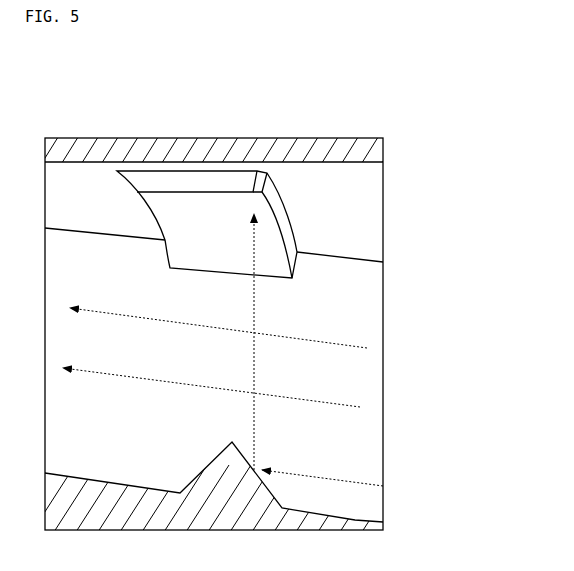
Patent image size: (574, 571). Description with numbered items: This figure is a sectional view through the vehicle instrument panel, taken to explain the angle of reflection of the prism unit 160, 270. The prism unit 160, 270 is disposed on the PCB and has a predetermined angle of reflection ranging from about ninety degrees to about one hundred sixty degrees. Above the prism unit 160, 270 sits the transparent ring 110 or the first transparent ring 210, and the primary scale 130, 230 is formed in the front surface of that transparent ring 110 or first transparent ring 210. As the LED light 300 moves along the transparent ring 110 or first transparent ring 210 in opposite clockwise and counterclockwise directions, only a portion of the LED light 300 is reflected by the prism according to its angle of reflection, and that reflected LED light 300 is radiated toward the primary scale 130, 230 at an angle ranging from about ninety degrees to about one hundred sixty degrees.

The transparent ring 110 is at (281, 332).
The first transparent ring 210 is at (355, 216).
The primary scale 130 is at (207, 177).
The primary scale 230 is at (201, 165).
The prism unit 160 is at (228, 478).
The prism unit 270 is at (197, 477).
The LED light 300 is at (337, 478).